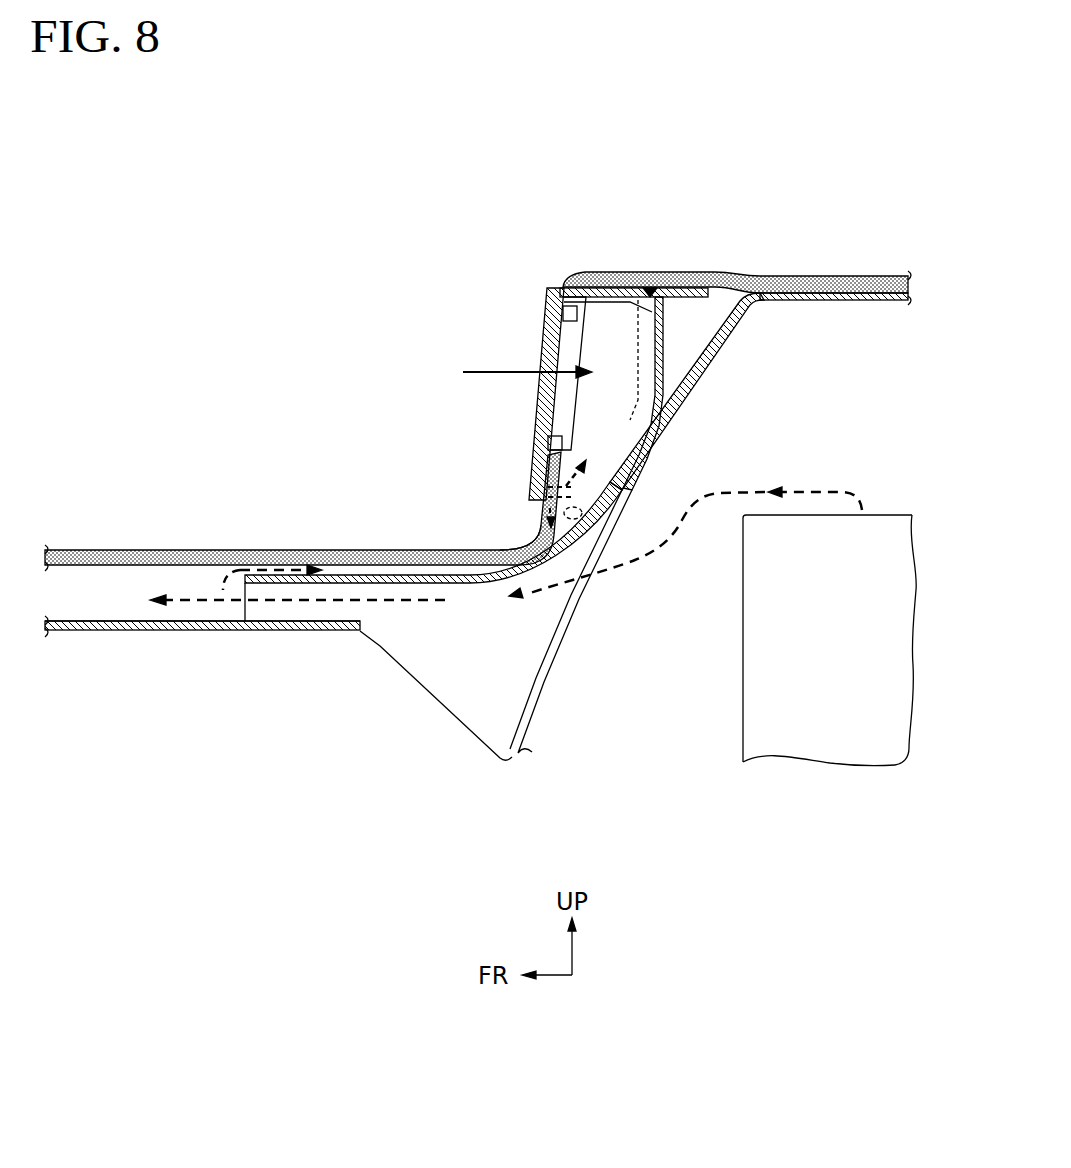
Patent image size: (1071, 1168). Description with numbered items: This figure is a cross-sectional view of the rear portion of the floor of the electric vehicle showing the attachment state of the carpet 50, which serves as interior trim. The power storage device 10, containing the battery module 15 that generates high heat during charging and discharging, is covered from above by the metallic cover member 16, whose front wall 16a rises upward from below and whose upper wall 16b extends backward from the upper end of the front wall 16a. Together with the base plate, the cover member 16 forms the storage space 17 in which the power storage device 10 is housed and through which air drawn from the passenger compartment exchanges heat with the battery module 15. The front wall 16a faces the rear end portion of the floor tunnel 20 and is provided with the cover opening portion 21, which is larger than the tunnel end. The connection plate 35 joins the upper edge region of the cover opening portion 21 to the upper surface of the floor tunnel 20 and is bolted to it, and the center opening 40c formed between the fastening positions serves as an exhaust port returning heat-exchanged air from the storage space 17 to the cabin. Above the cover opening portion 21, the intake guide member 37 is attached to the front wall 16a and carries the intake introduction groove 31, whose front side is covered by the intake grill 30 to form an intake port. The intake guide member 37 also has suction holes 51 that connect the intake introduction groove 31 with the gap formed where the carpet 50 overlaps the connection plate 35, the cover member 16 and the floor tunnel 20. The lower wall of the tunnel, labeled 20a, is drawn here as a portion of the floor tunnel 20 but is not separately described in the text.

The power storage device 10 is at (869, 502).
The battery module 15 is at (837, 690).
The cover member 16 is at (822, 280).
The front wall 16a is at (617, 522).
The upper wall 16b is at (780, 301).
The storage space 17 is at (682, 583).
The floor tunnel 20 is at (202, 510).
The duct lower wall 20a is at (113, 620).
The cover opening portion 21 is at (527, 546).
The intake grill 30 is at (547, 325).
The intake introduction groove 31 is at (605, 300).
The connection plate 35 is at (379, 569).
The intake guide member 37 is at (650, 287).
The center opening 40c is at (262, 610).
The carpet 50 is at (197, 549).
The suction holes 51 is at (562, 514).